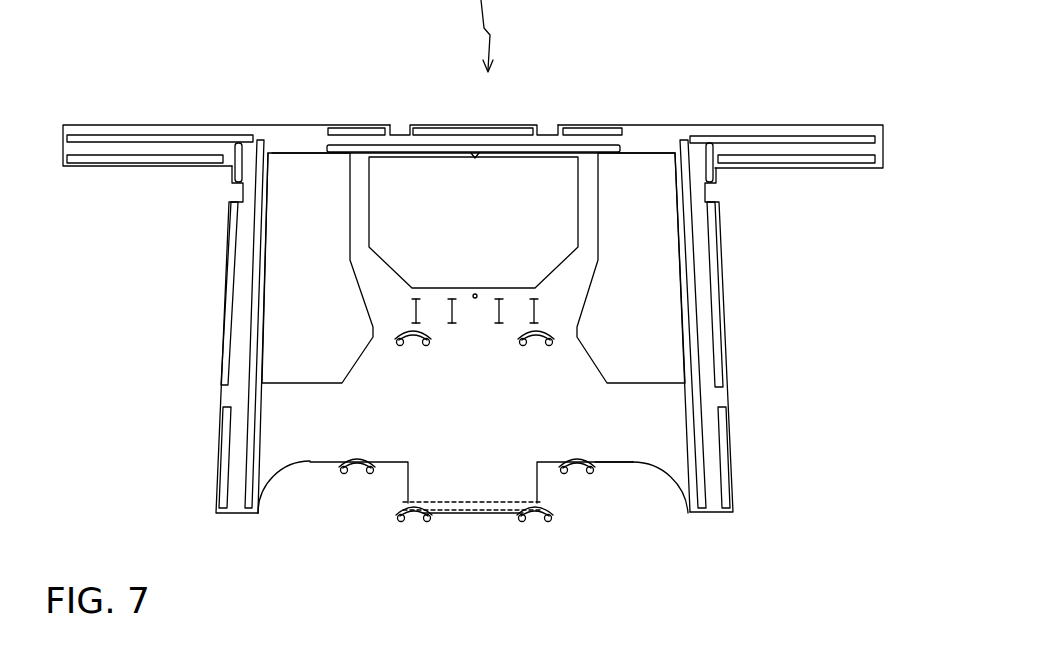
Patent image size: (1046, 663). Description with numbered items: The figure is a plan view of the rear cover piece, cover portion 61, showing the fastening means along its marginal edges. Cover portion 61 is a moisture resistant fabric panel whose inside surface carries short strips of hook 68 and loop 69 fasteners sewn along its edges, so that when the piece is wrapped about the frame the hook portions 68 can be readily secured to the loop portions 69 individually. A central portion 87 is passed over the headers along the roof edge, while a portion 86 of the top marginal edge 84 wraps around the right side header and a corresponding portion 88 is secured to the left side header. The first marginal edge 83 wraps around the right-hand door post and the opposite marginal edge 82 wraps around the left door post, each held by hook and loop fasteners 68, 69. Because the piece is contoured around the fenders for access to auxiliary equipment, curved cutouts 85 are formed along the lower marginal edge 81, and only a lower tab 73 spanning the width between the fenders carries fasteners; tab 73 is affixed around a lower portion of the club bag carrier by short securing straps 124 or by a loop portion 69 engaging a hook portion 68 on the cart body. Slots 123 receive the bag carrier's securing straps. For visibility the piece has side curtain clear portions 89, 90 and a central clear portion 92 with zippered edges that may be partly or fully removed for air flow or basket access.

The cover portion 61 is at (540, 435).
The hook portions 68 is at (335, 130).
The loop portions 69 is at (365, 147).
The lower tab 73 is at (487, 513).
The lower marginal edge 81 is at (610, 464).
The marginal edge 82 is at (723, 292).
The first marginal edge 83 is at (216, 437).
The top marginal edge 84 is at (527, 125).
The curved cutouts 85 is at (668, 487).
The portion of top marginal edge 86 is at (802, 124).
The central portion 87 is at (442, 125).
The portion 88 is at (148, 123).
The side curtain clear portion 89 is at (662, 306).
The side curtain clear portion 90 is at (332, 328).
The clear portion 92 is at (492, 238).
The slots 123 is at (497, 317).
The securing straps 124 is at (343, 470).